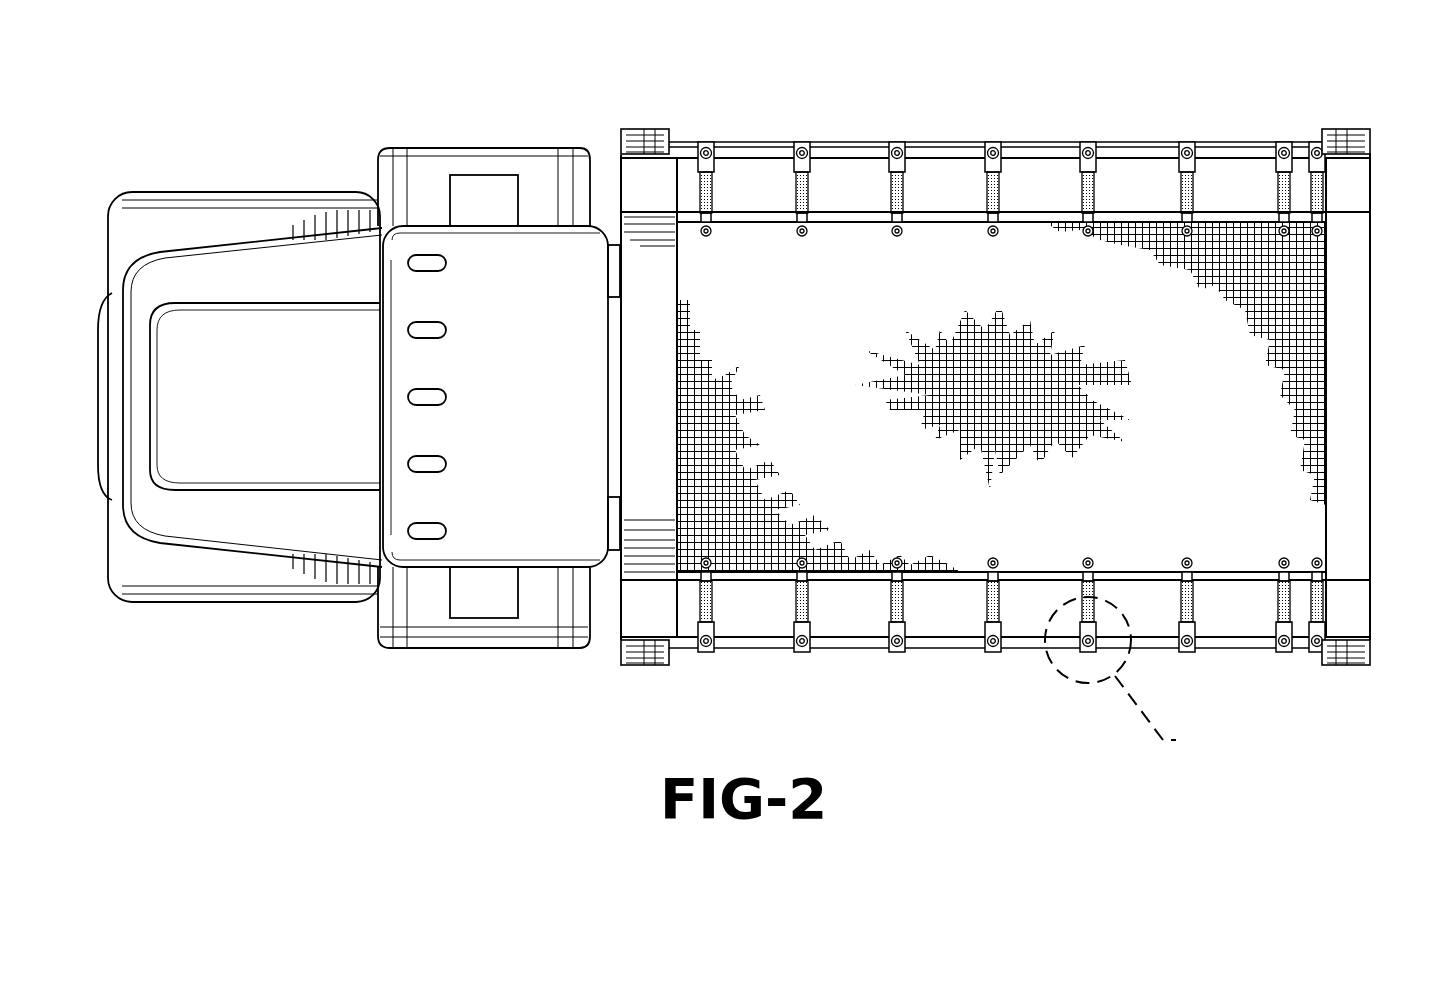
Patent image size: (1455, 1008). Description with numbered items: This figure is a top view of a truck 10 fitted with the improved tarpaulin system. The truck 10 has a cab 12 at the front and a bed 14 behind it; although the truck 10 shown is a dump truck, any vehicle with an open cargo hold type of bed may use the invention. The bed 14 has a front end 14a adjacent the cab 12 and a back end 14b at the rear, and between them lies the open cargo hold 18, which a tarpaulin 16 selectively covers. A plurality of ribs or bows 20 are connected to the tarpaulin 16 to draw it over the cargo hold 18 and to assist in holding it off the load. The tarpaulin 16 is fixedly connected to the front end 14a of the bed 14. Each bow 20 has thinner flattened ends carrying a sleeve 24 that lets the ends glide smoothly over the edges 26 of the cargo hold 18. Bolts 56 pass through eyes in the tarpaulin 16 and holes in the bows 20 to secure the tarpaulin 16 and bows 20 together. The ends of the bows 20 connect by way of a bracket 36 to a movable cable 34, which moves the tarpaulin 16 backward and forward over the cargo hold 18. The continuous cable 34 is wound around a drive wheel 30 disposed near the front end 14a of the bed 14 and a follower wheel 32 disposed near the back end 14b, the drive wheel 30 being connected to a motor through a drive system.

The truck 10 is at (972, 377).
The cab 12 is at (480, 136).
The bed 14 is at (972, 393).
The front end of bed 14a is at (642, 373).
The back end of bed 14b is at (1355, 338).
The tarpaulin 16 is at (1130, 262).
The open cargo hold 18 is at (938, 212).
The bows 20 is at (808, 186).
The sleeve 24 is at (760, 148).
The edges of cargo hold 26 is at (1246, 180).
The drive wheel 30 is at (640, 142).
The follower wheel 32 is at (1346, 140).
The cable 34 is at (868, 145).
The bracket 36 is at (703, 136).
The bolts 56 is at (802, 238).